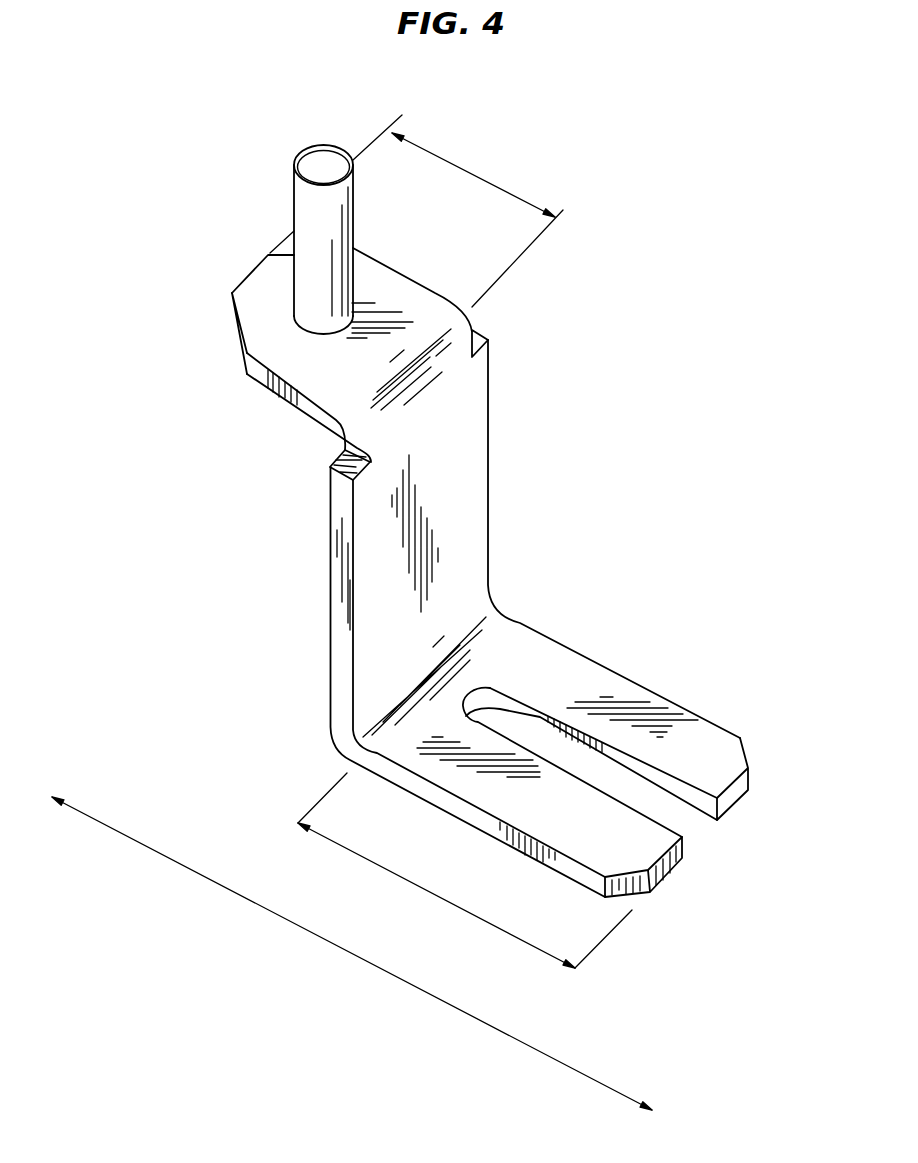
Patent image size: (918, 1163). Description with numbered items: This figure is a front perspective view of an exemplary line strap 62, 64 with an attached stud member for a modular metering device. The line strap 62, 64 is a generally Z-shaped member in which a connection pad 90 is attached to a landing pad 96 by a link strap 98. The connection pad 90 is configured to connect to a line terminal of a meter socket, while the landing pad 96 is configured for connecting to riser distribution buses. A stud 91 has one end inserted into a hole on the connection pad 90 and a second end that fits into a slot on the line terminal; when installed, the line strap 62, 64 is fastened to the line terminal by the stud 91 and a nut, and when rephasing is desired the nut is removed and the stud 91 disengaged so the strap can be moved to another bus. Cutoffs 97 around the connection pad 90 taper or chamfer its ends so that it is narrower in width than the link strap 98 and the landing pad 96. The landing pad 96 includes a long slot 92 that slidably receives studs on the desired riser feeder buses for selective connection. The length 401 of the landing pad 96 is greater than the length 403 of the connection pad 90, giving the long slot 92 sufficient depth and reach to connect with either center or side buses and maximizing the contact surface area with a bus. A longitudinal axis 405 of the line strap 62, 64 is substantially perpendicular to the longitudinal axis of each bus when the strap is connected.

The line strap 62 is at (492, 521).
The line strap 64 is at (643, 433).
The connection pad 90 is at (250, 323).
The stud 91 is at (303, 209).
The long slot 92 is at (587, 772).
The landing pad 96 is at (730, 762).
The cutoffs 97 is at (317, 403).
The link strap 98 is at (340, 658).
The length of the landing pad 401 is at (418, 887).
The length of the connection pad 403 is at (470, 173).
The longitudinal axis 405 is at (353, 955).